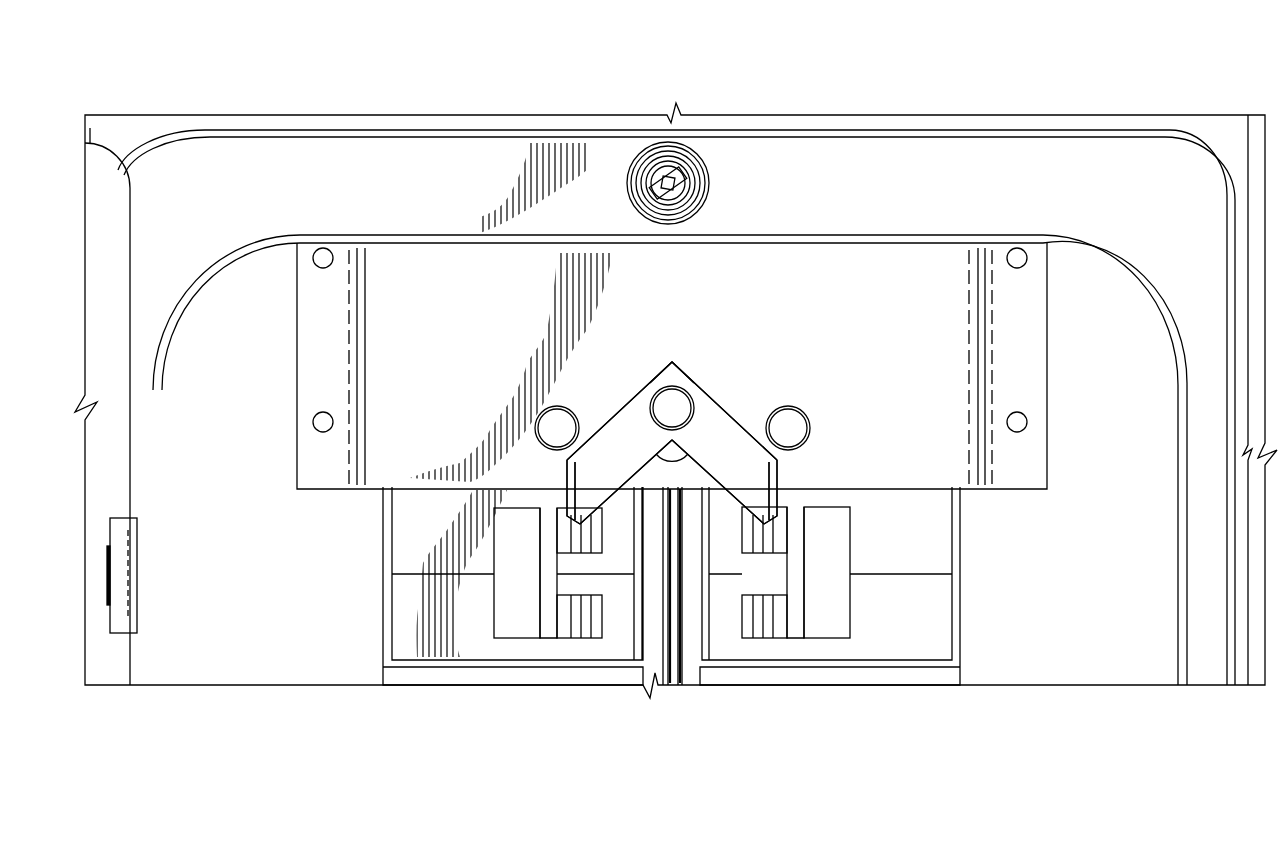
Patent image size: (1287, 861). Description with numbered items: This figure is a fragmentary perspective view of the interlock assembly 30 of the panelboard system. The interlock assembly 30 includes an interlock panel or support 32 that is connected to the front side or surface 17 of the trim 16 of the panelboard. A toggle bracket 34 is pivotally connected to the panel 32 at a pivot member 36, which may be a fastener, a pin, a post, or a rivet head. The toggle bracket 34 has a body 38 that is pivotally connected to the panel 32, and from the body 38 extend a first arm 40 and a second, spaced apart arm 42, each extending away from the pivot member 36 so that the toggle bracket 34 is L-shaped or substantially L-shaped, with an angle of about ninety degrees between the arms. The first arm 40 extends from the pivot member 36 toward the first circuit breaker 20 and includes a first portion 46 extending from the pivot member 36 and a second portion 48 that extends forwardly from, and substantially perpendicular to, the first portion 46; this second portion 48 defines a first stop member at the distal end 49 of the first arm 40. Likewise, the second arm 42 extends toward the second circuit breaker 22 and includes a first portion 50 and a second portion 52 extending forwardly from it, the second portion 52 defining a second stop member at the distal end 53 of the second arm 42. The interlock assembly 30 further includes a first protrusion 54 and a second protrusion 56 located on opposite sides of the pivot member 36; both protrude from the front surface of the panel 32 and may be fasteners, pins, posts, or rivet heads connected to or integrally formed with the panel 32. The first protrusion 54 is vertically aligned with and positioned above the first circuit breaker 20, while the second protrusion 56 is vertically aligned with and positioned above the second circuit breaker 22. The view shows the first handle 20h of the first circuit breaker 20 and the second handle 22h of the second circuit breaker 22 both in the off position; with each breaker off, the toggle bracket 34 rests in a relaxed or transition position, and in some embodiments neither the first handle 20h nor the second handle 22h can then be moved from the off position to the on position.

The trim 16 is at (676, 387).
The front side or surface of the trim 17 is at (268, 272).
The first circuit breaker 20 is at (480, 615).
The first handle 20h is at (527, 636).
The second circuit breaker 22 is at (848, 615).
The second handle 22h is at (826, 636).
The interlock assembly 30 is at (733, 422).
The interlock panel or support 32 is at (905, 262).
The toggle bracket 34 is at (785, 298).
The pivot member 36 is at (688, 392).
The body 38 is at (685, 350).
The first arm 40 is at (656, 393).
The second arm 42 is at (750, 415).
The first portion of the first arm 46 is at (600, 402).
The second portion of the first arm 48 is at (491, 473).
The distal end of the first arm 49 is at (560, 476).
The first portion of the second arm 50 is at (782, 406).
The second portion of the second arm 52 is at (821, 484).
The distal end of the second arm 53 is at (780, 477).
The first protrusion 54 is at (538, 420).
The second protrusion 56 is at (814, 426).